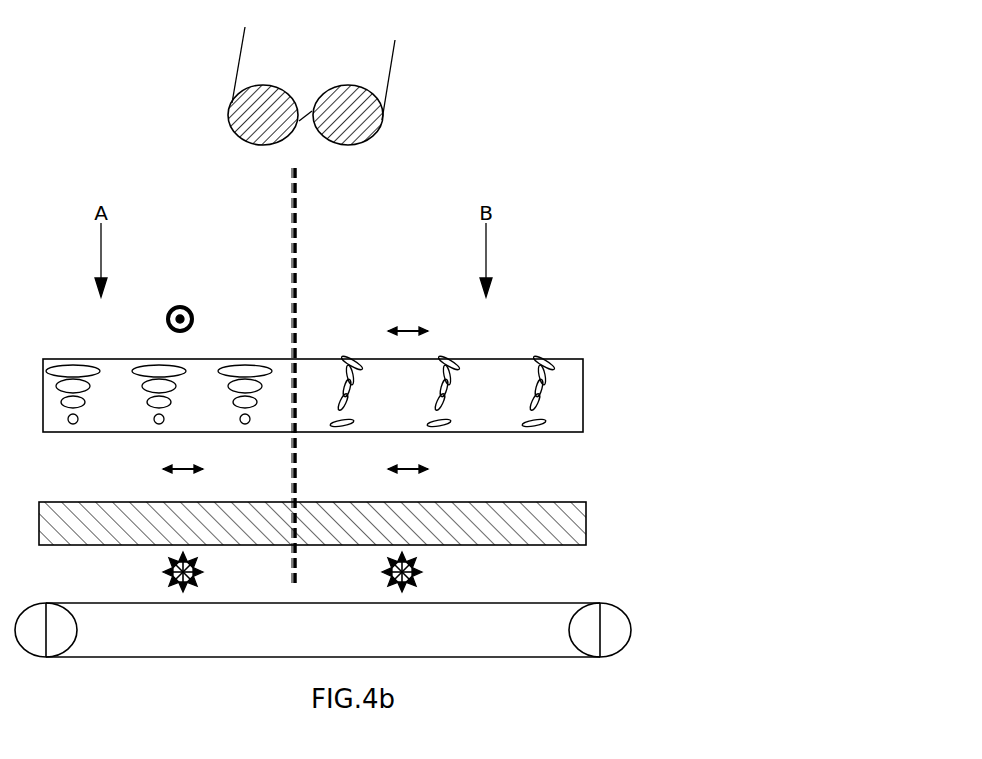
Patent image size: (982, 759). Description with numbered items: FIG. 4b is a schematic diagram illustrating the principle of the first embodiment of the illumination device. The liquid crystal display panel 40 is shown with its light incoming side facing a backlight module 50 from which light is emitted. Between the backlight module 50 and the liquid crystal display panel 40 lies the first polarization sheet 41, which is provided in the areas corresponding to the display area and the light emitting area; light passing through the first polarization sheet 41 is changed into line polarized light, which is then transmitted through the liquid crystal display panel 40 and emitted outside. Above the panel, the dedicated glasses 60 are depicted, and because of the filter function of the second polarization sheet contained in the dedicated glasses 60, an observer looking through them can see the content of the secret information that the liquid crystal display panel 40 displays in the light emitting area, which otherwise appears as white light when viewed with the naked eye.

The dedicated glasses 60 is at (382, 121).
The liquid crystal display panel 40 is at (583, 414).
The first polarization sheet 41 is at (586, 525).
The backlight module 50 is at (628, 632).